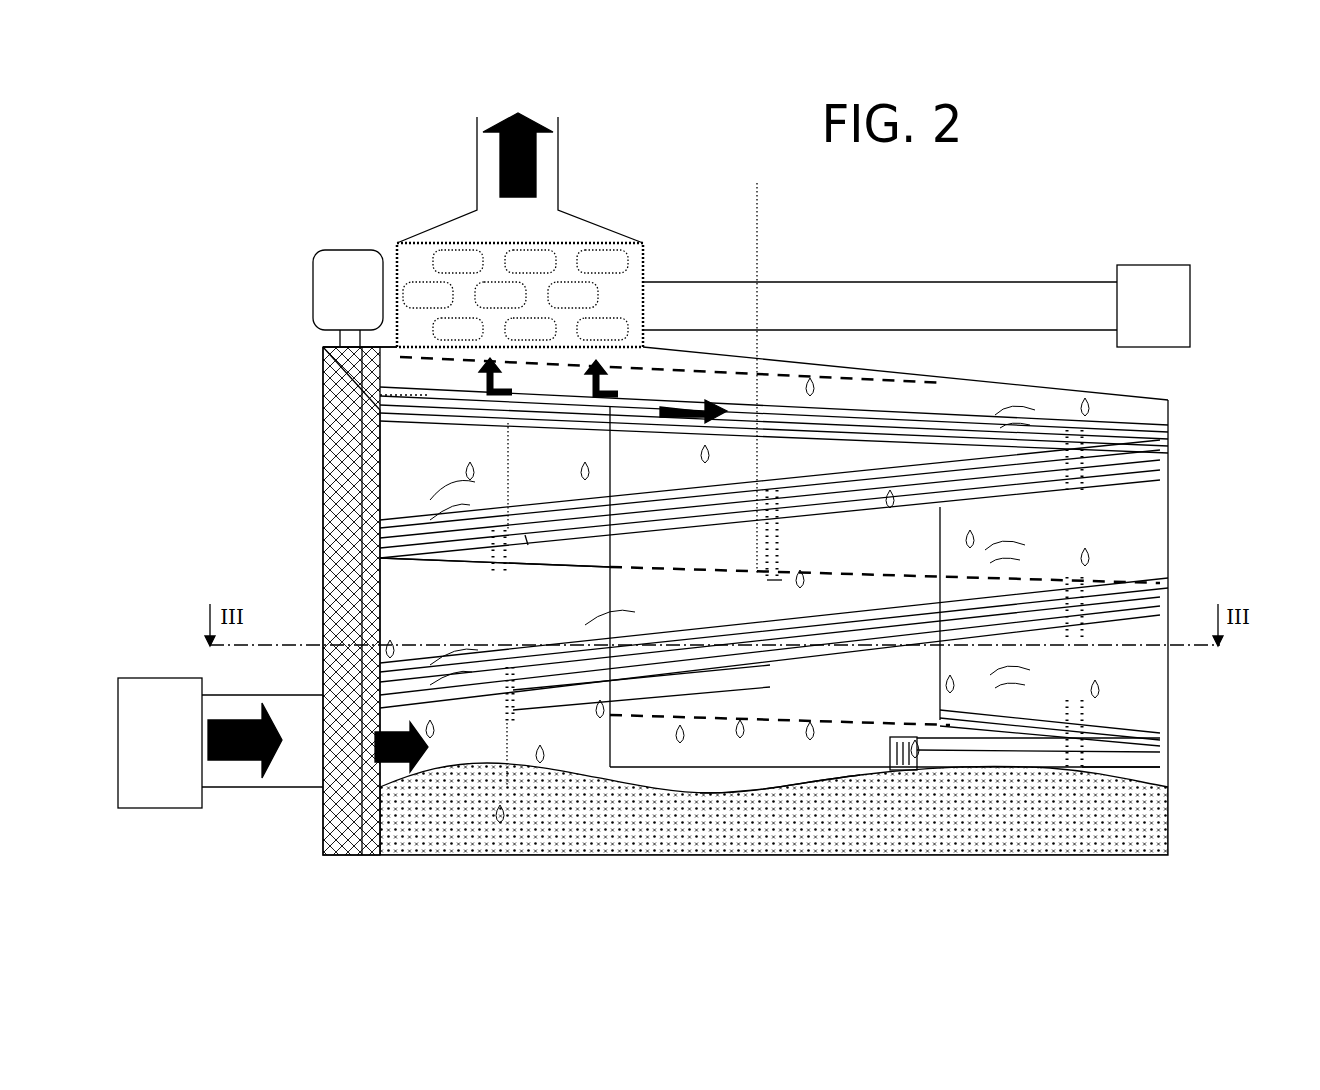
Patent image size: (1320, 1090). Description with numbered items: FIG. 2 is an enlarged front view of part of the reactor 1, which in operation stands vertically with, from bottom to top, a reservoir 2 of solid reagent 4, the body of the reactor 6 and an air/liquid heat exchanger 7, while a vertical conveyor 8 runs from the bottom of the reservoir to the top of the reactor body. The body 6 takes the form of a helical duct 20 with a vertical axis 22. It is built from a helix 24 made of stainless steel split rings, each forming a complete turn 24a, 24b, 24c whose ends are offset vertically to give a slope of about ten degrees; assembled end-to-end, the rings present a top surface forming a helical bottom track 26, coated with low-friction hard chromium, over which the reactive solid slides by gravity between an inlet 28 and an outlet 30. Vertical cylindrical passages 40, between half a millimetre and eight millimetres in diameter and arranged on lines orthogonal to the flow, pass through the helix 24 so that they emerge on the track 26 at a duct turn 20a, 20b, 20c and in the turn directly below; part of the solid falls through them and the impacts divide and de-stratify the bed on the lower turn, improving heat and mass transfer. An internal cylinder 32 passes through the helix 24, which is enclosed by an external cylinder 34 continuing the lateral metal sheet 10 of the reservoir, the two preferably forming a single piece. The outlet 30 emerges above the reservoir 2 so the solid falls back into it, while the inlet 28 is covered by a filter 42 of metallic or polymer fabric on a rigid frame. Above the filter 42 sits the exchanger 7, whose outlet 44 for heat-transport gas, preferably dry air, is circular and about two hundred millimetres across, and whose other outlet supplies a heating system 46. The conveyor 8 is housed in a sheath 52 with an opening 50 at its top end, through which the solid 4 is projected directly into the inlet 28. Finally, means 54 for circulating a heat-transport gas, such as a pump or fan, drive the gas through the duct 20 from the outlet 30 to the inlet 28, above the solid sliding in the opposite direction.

The reactor 1 is at (1069, 186).
The reservoir 2 is at (1172, 820).
The solid reagent 4 is at (1080, 770).
The body of the reactor 6 is at (1176, 472).
The air/liquid heat exchanger 7 is at (587, 223).
The vertical conveyor 8 is at (323, 356).
The lateral metal sheet 10 is at (1168, 770).
The helical duct 20 is at (879, 565).
The duct turn 20a is at (392, 450).
The duct turn 20b is at (392, 592).
The duct turn 20c is at (597, 693).
The vertical axis 22 is at (757, 190).
The helix 24 is at (1172, 447).
The helix turn 24a is at (1168, 490).
The helix turn 24b is at (1148, 602).
The helix turn 24c is at (1168, 745).
The helical bottom track 26 is at (745, 525).
The inlet 28 is at (420, 375).
The outlet 30 is at (855, 755).
The internal cylinder 32 is at (616, 440).
The external cylinder 34 is at (1168, 700).
The passage 40 is at (525, 535).
The filter 42 is at (800, 368).
The outlet of the exchanger for heat-transport gas 44 is at (480, 122).
The heating system 46 is at (1168, 277).
The opening 50 is at (372, 380).
The sheath 52 is at (323, 512).
The means for circulating a heat-transport gas 54 is at (160, 700).